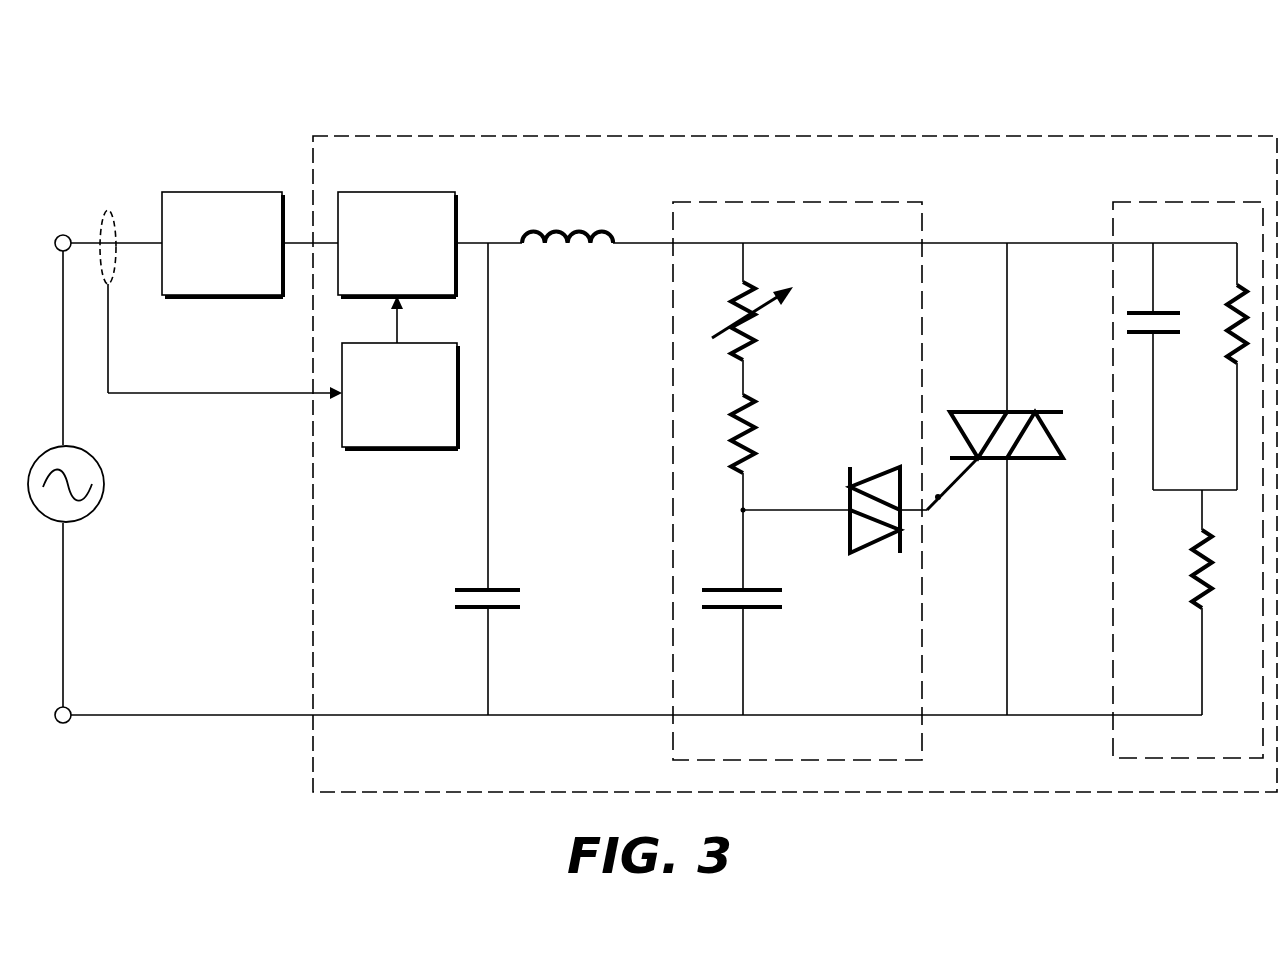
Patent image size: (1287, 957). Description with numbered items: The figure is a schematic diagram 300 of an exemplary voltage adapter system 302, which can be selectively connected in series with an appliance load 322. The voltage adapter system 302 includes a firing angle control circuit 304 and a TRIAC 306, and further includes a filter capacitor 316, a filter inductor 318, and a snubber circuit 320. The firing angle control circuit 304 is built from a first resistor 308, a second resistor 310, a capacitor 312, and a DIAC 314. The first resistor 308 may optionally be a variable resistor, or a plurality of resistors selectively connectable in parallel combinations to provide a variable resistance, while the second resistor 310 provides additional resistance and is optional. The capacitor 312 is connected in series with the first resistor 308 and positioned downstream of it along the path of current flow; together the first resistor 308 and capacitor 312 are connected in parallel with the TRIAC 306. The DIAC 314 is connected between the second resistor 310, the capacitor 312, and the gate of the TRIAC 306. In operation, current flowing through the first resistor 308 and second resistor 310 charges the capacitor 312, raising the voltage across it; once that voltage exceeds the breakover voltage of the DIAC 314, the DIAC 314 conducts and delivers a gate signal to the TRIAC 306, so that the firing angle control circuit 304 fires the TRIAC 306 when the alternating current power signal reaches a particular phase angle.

The schematic diagram 300 is at (190, 109).
The voltage adapter system 302 is at (318, 136).
The firing angle control circuit 304 is at (672, 202).
The TRIAC 306 is at (1036, 408).
The first resistor 308 is at (760, 328).
The second resistor 310 is at (758, 443).
The capacitor 312 is at (765, 608).
The DIAC 314 is at (846, 528).
The filter capacitor 316 is at (505, 586).
The filter inductor 318 is at (555, 230).
The snubber circuit 320 is at (1112, 202).
The appliance load 322 is at (162, 192).